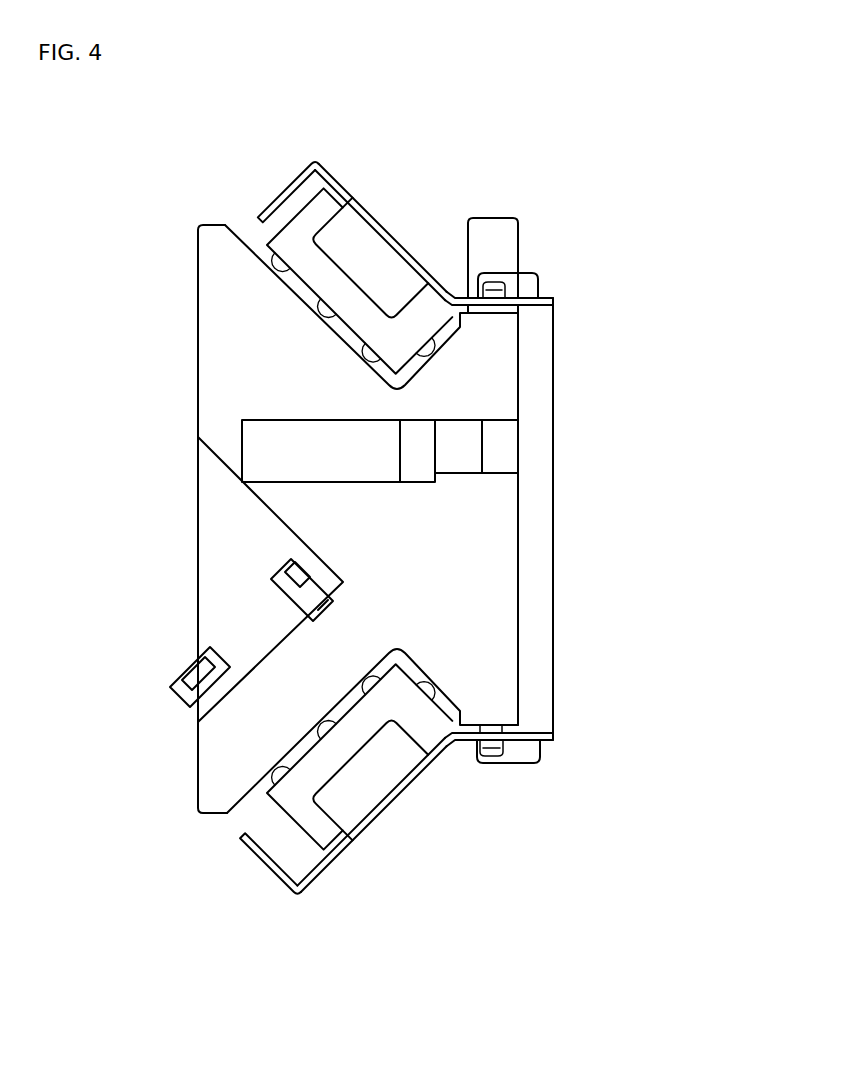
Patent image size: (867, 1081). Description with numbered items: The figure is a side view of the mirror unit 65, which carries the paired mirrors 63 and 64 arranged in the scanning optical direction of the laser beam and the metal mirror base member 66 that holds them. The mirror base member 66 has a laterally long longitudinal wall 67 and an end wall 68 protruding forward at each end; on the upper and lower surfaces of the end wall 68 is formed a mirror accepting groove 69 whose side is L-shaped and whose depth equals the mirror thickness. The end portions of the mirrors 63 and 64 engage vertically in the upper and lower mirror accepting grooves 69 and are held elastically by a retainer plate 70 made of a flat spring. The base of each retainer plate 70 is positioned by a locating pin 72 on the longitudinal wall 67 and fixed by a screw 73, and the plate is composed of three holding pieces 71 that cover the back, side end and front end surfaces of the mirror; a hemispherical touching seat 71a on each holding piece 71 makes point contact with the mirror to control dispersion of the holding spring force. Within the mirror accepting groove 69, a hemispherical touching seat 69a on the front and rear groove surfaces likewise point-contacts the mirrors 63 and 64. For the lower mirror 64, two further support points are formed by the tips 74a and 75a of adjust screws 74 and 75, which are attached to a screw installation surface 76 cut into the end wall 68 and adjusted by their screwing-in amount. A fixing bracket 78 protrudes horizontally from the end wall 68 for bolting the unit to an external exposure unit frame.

The mirror 63 is at (262, 240).
The mirror 64 is at (322, 853).
The mirror unit 65 is at (622, 444).
The mirror base member 66 is at (195, 414).
The longitudinal wall 67 is at (556, 574).
The end wall 68 is at (510, 638).
The mirror accepting groove 69 is at (222, 227).
The touching seat 69a is at (274, 268).
The retainer plate 70 is at (386, 221).
The holding piece 71 is at (317, 168).
The touching seat 71a is at (282, 198).
The locating pin 72 is at (494, 290).
The screw 73 is at (530, 272).
The adjust screw 74 is at (283, 590).
The tip 74a is at (372, 676).
The adjust screw 75 is at (185, 672).
The tip 75a is at (279, 766).
The screw installation surface 76 is at (256, 665).
The fixing bracket 78 is at (352, 483).